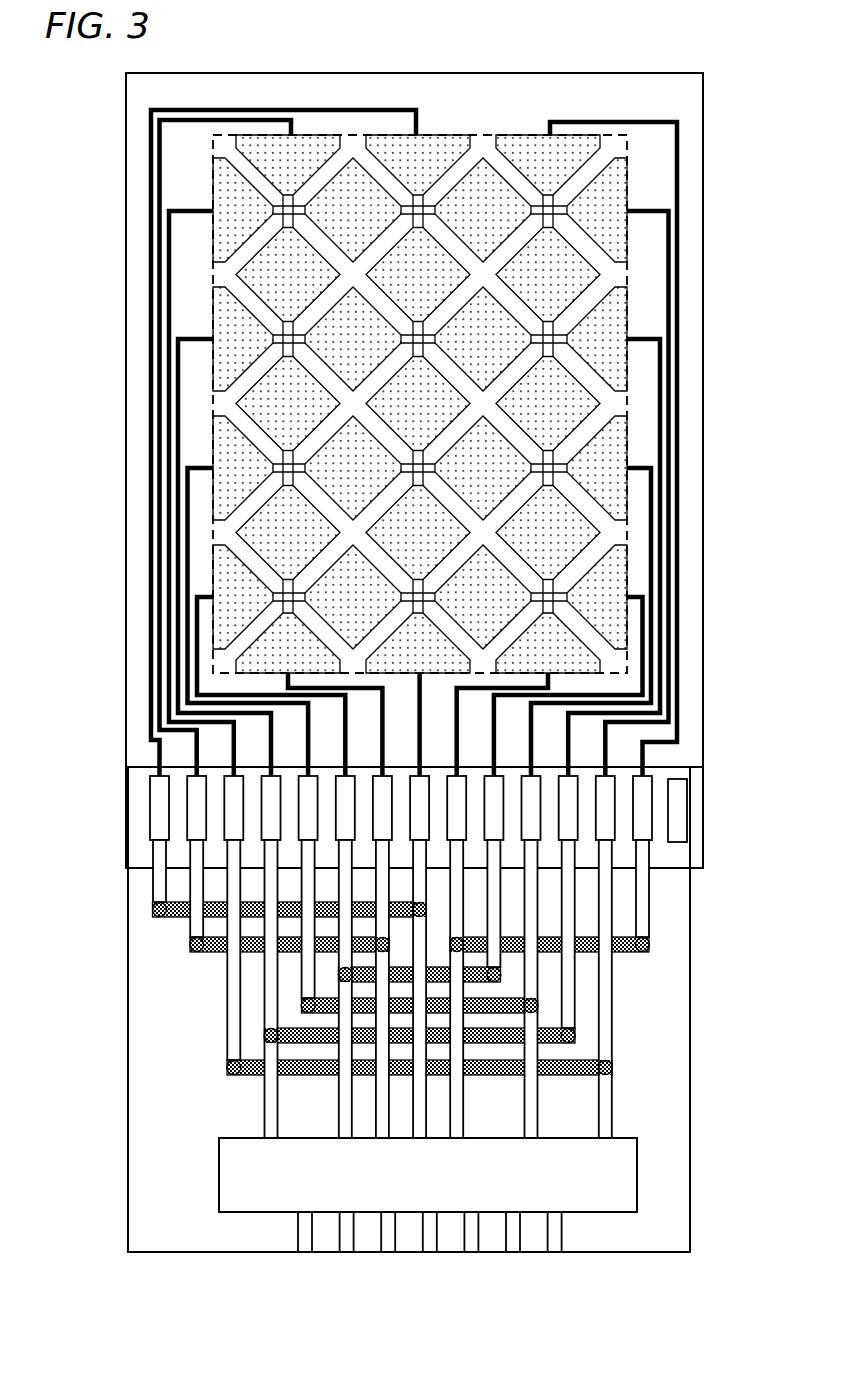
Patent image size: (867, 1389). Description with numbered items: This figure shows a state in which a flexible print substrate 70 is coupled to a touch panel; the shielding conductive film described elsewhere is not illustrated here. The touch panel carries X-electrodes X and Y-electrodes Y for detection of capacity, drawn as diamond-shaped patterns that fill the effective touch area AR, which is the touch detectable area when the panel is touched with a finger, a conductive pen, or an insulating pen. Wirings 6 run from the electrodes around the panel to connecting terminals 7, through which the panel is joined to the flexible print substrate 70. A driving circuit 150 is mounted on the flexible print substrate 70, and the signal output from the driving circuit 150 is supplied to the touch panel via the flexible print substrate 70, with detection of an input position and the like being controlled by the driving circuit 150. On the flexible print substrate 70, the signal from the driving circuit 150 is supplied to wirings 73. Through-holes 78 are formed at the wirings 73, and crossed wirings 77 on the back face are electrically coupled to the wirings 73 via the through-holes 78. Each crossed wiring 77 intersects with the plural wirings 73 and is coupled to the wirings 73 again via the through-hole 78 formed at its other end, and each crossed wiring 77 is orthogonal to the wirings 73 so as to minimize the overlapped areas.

The wirings 6 is at (679, 150).
The connecting terminals 7 is at (158, 805).
The flexible print substrate 70 is at (679, 1044).
The wirings 73 is at (605, 1003).
The crossed wirings 77 is at (212, 952).
The through-holes 78 is at (152, 909).
The driving circuit 150 is at (625, 1178).
The X-electrodes X is at (430, 160).
The Y-electrodes Y is at (604, 330).
The effective touch area AR is at (487, 140).